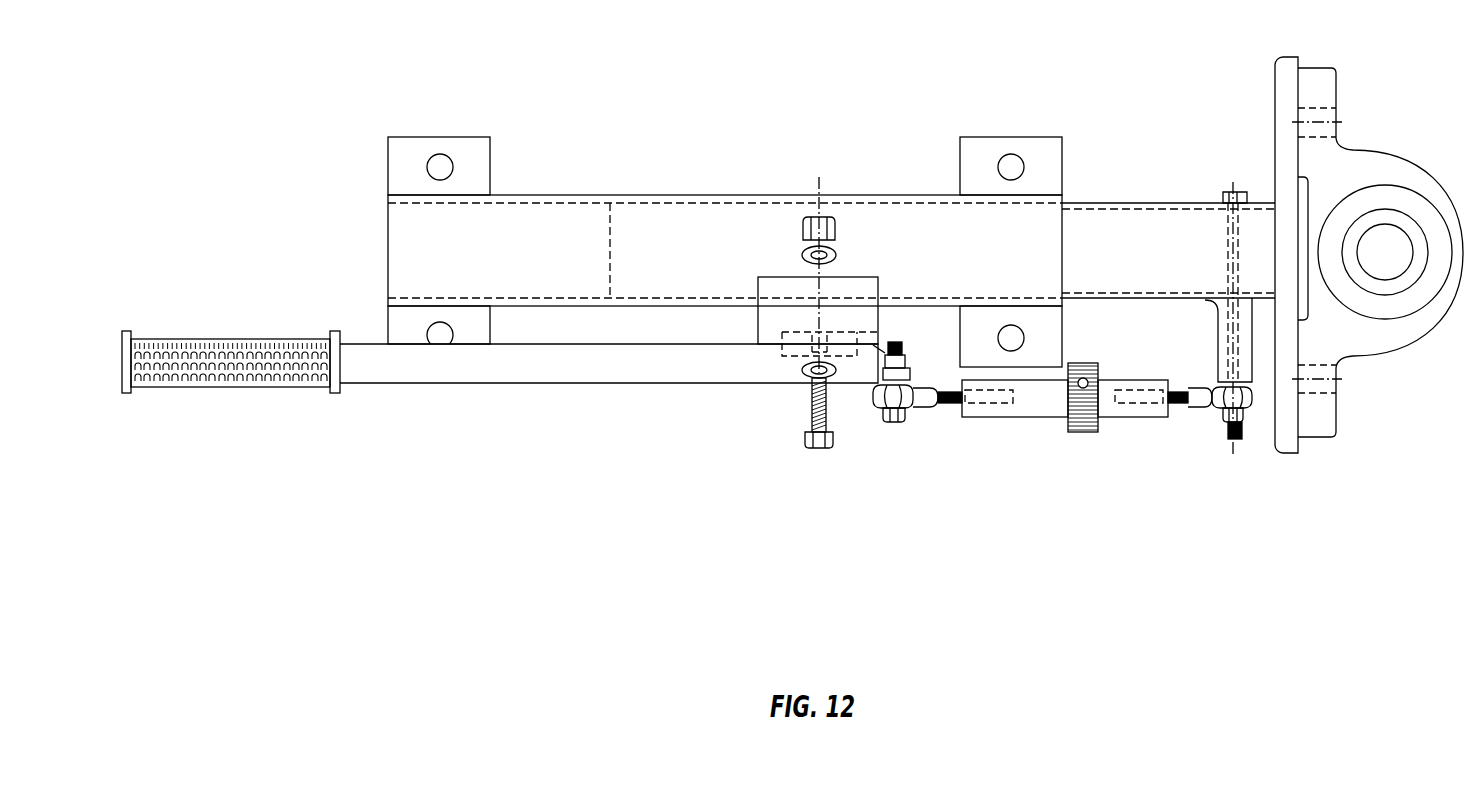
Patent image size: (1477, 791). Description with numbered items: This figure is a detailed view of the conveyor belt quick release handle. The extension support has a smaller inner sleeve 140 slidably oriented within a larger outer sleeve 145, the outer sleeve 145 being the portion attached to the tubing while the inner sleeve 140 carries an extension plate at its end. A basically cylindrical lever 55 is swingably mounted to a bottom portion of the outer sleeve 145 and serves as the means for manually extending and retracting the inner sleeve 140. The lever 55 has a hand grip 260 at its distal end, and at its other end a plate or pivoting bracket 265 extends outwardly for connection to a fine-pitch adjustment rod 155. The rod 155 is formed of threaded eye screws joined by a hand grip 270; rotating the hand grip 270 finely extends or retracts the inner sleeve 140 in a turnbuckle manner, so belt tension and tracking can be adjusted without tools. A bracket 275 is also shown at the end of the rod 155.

The hand grip 260 is at (235, 390).
The lever 55 is at (555, 367).
The outer sleeve 145 is at (633, 194).
The inner sleeve 140 is at (1118, 200).
The pivoting bracket 265 is at (785, 317).
The fine-pitch adjustment rod 155 is at (988, 405).
The hand grip 270 is at (1082, 434).
The mounting bracket 275 is at (1225, 335).